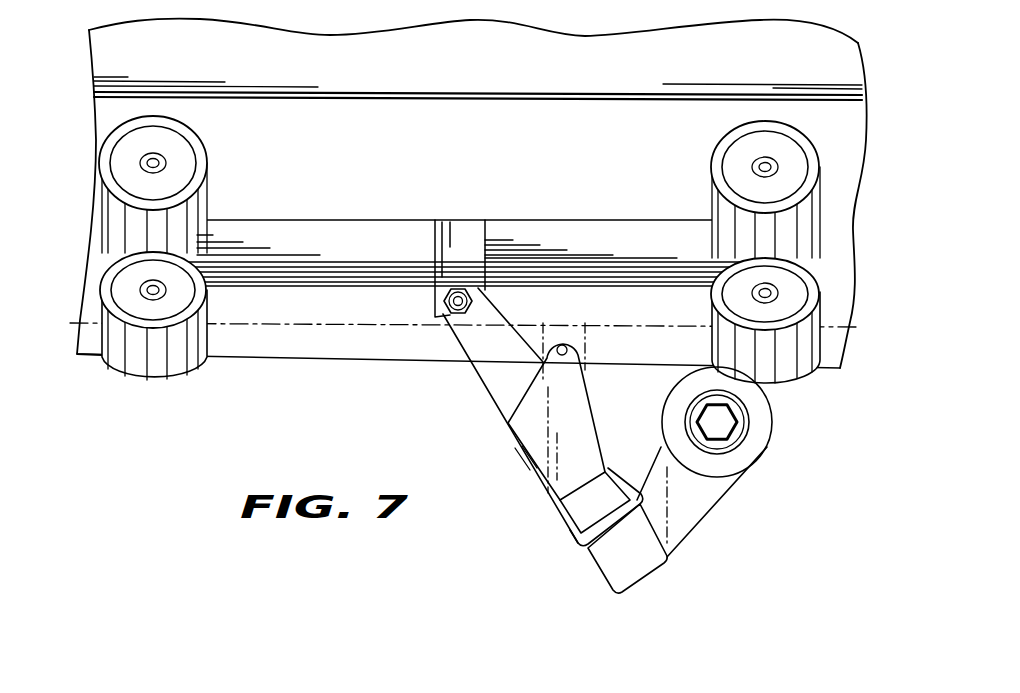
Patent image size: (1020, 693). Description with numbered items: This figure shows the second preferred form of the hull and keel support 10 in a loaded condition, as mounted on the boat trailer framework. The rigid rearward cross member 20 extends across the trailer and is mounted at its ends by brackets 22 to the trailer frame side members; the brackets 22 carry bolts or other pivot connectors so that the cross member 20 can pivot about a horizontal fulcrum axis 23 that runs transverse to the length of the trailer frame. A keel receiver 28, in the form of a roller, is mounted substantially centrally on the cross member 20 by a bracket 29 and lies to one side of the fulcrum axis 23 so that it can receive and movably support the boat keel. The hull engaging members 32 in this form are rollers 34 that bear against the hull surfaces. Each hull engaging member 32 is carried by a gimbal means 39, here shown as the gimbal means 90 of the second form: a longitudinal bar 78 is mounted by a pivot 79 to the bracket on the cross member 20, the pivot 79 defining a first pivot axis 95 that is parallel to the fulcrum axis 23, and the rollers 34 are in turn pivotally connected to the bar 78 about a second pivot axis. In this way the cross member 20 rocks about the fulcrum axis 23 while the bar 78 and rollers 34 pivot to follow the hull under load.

The hull and keel support 10 is at (482, 470).
The rearward cross member 20 is at (605, 573).
The bracket 22 is at (575, 410).
The fulcrum axis 23 is at (567, 348).
The keel receiver 28 is at (755, 447).
The bracket 29 is at (685, 502).
The hull engaging member 32 is at (207, 130).
The roller 34 is at (203, 205).
The gimbal means 39 is at (448, 383).
The longitudinal bar 78 is at (346, 222).
The pivot 79 is at (468, 285).
The gimbal means 90 is at (487, 200).
The first pivot axis 95 is at (440, 316).